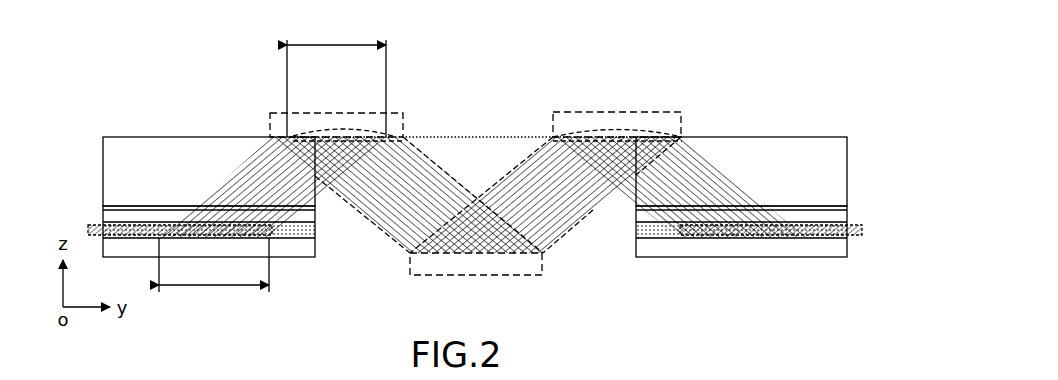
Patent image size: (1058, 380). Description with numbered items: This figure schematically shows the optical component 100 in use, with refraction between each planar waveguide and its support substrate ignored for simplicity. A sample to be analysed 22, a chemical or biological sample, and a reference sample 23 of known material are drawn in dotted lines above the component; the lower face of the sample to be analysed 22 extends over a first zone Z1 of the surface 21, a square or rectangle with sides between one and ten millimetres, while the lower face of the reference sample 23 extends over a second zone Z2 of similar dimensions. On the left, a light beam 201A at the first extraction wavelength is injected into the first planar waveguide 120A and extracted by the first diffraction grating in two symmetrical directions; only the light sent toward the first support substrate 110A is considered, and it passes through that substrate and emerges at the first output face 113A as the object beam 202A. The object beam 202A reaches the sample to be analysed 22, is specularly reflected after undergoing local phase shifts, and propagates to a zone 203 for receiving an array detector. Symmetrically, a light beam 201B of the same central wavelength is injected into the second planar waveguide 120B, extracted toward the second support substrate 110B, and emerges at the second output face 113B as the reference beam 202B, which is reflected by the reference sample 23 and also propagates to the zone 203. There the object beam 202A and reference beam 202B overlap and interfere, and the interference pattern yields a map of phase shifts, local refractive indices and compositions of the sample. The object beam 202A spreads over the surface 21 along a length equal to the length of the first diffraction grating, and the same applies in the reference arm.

The optical component 100 is at (476, 180).
The first support substrate 110A is at (107, 157).
The second support substrate 110B is at (846, 157).
The first planar waveguide 120A is at (329, 244).
The second planar waveguide 120B is at (856, 213).
The light beam 201A is at (90, 228).
The light beam 201B is at (861, 230).
The object beam 202A is at (272, 138).
The reference beam 202B is at (678, 135).
The zone for receiving an array detector 203 is at (498, 265).
The surface 21 is at (490, 135).
The sample to be analysed 22 is at (335, 117).
The reference sample 23 is at (617, 117).
The first output face 113A is at (283, 162).
The second output face 113B is at (640, 197).
The first zone Z1 is at (367, 127).
The second zone Z2 is at (581, 128).